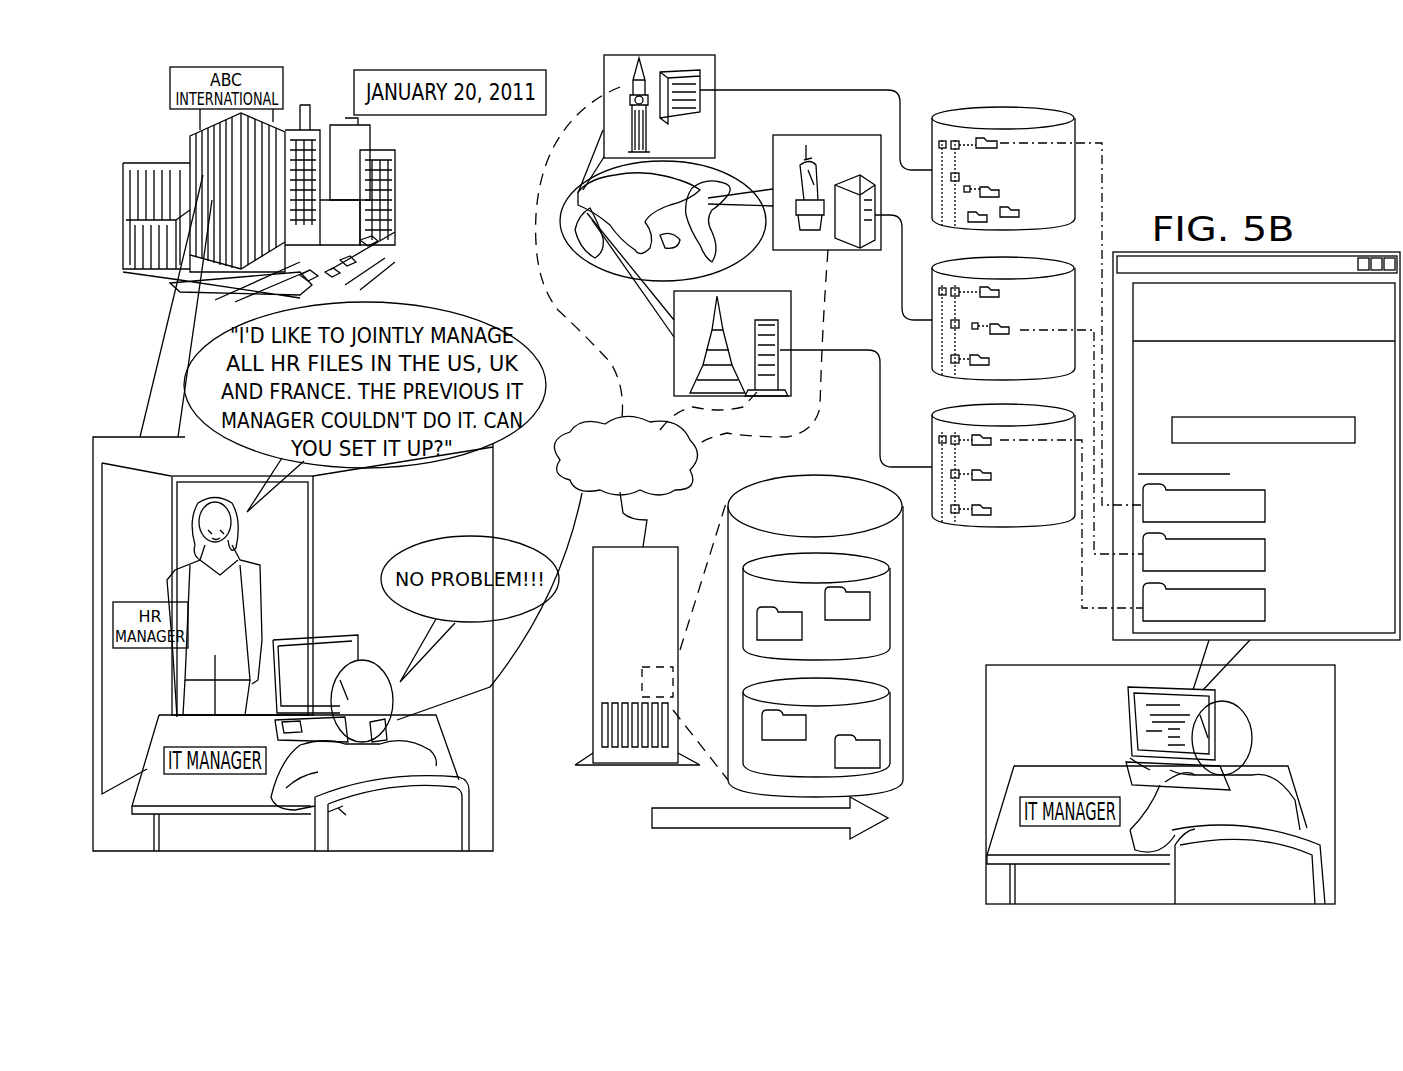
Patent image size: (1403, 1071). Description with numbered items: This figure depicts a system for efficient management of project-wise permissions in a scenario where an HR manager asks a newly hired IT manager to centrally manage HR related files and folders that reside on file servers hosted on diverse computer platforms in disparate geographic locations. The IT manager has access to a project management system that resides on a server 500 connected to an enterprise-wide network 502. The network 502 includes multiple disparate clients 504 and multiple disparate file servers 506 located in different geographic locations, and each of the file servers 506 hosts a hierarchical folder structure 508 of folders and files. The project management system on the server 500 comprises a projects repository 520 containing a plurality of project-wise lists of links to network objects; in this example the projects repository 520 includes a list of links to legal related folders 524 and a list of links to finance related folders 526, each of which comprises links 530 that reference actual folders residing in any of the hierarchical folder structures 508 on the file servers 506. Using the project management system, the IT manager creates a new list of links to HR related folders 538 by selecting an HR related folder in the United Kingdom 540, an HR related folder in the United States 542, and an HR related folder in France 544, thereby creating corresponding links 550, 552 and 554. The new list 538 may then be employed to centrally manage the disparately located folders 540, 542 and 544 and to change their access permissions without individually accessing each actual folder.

The server 500 is at (593, 700).
The enterprise-wide network 502 is at (567, 488).
The clients 504 is at (335, 655).
The file servers 506 is at (700, 105).
The hierarchical folder structure 508 is at (990, 335).
The projects repository 520 is at (850, 621).
The list of links to legal related folders 524 is at (857, 655).
The list of links to finance related folders 526 is at (890, 712).
The links 530 is at (795, 630).
The new list of links to HR related folders 538 is at (1256, 468).
The HR related folder in the United Kingdom 540 is at (990, 148).
The HR related folder in the United States 542 is at (1003, 330).
The HR related folder in France 544 is at (985, 447).
The link 550 is at (1265, 505).
The link 552 is at (1265, 555).
The link 554 is at (1265, 607).